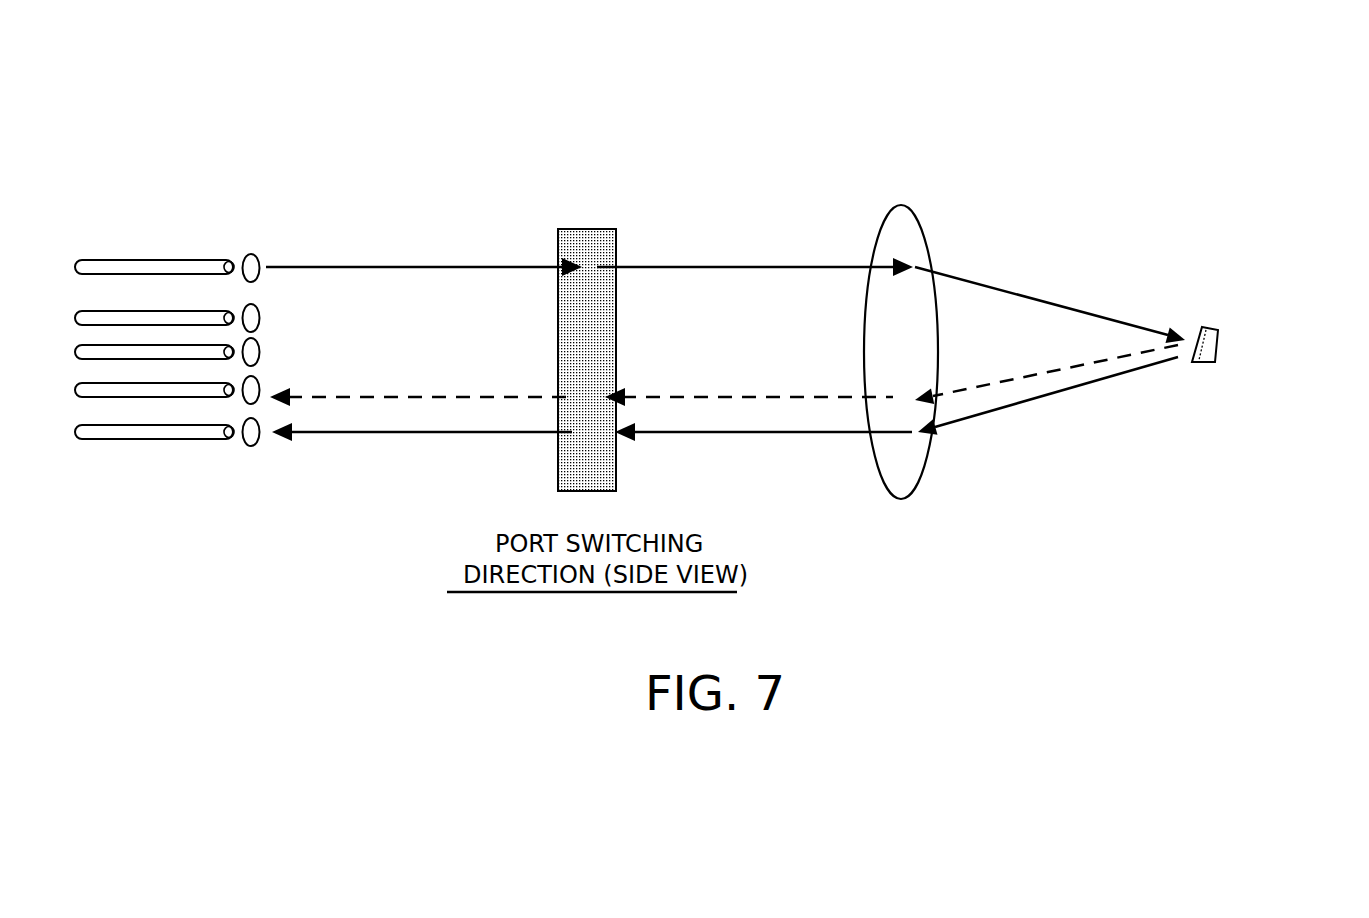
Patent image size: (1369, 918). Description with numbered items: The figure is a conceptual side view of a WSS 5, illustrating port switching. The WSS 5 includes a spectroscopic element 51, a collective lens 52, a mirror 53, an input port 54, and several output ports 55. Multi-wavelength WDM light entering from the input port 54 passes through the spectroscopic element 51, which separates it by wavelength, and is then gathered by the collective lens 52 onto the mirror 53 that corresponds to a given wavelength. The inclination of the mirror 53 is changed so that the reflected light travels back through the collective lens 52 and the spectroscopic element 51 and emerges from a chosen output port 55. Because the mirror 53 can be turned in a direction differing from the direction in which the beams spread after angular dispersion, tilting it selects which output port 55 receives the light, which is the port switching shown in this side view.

The WSS 5 is at (543, 93).
The spectroscopic element 51 is at (588, 229).
The collective lens 52 is at (900, 206).
The mirror 53 is at (1212, 325).
The input port 54 is at (256, 256).
The output port 55 is at (250, 446).